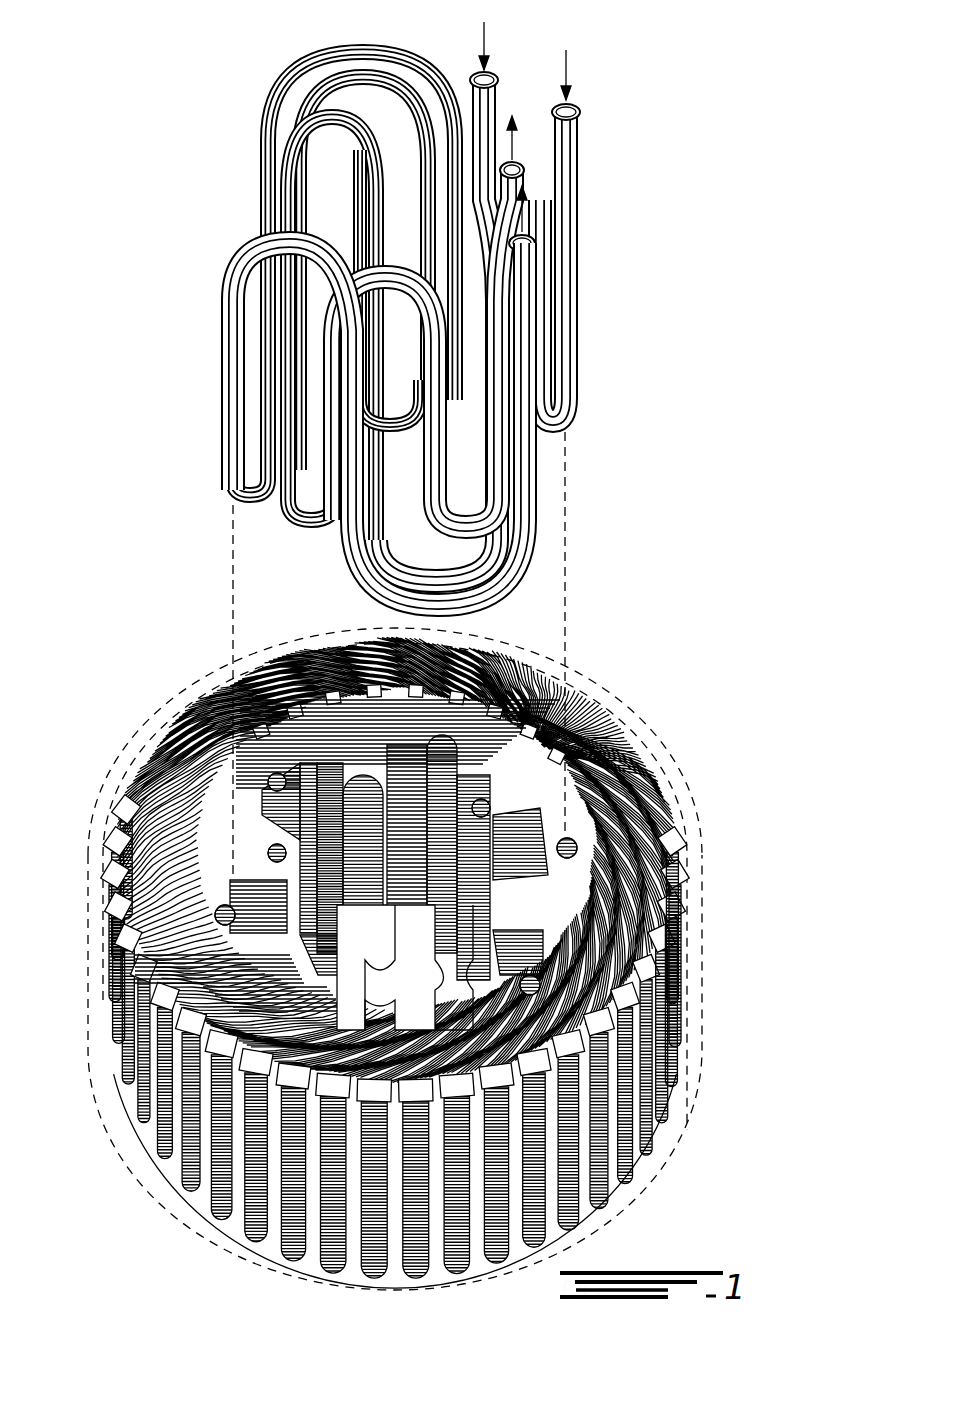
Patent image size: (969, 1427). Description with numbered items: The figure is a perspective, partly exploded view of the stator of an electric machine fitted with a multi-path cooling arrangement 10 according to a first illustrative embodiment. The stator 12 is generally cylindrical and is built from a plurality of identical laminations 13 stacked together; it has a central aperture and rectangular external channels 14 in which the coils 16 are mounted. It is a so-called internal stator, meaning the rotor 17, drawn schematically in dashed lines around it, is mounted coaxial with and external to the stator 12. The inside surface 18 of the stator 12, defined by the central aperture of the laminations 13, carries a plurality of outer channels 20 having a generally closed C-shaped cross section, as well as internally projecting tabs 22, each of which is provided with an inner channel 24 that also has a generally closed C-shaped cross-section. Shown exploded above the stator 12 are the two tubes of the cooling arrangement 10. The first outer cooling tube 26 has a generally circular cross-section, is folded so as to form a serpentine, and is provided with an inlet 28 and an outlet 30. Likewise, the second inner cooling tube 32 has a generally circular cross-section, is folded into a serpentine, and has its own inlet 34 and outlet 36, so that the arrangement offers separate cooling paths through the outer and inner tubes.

The multi-path cooling arrangement 10 is at (150, 274).
The stator 12 is at (628, 736).
The laminations 13 is at (686, 1040).
The rectangular external channels 14 is at (634, 810).
The coils 16 is at (652, 846).
The rotor 17 is at (104, 810).
The inside surface 18 is at (484, 782).
The outer channels 20 is at (520, 652).
The internally projecting tabs 22 is at (346, 773).
The inner channel 24 is at (372, 796).
The first outer cooling tube 26 is at (582, 186).
The inlet 28 is at (580, 112).
The outlet 30 is at (536, 246).
The second inner cooling tube 32 is at (268, 206).
The inlet 34 is at (496, 74).
The outlet 36 is at (520, 163).